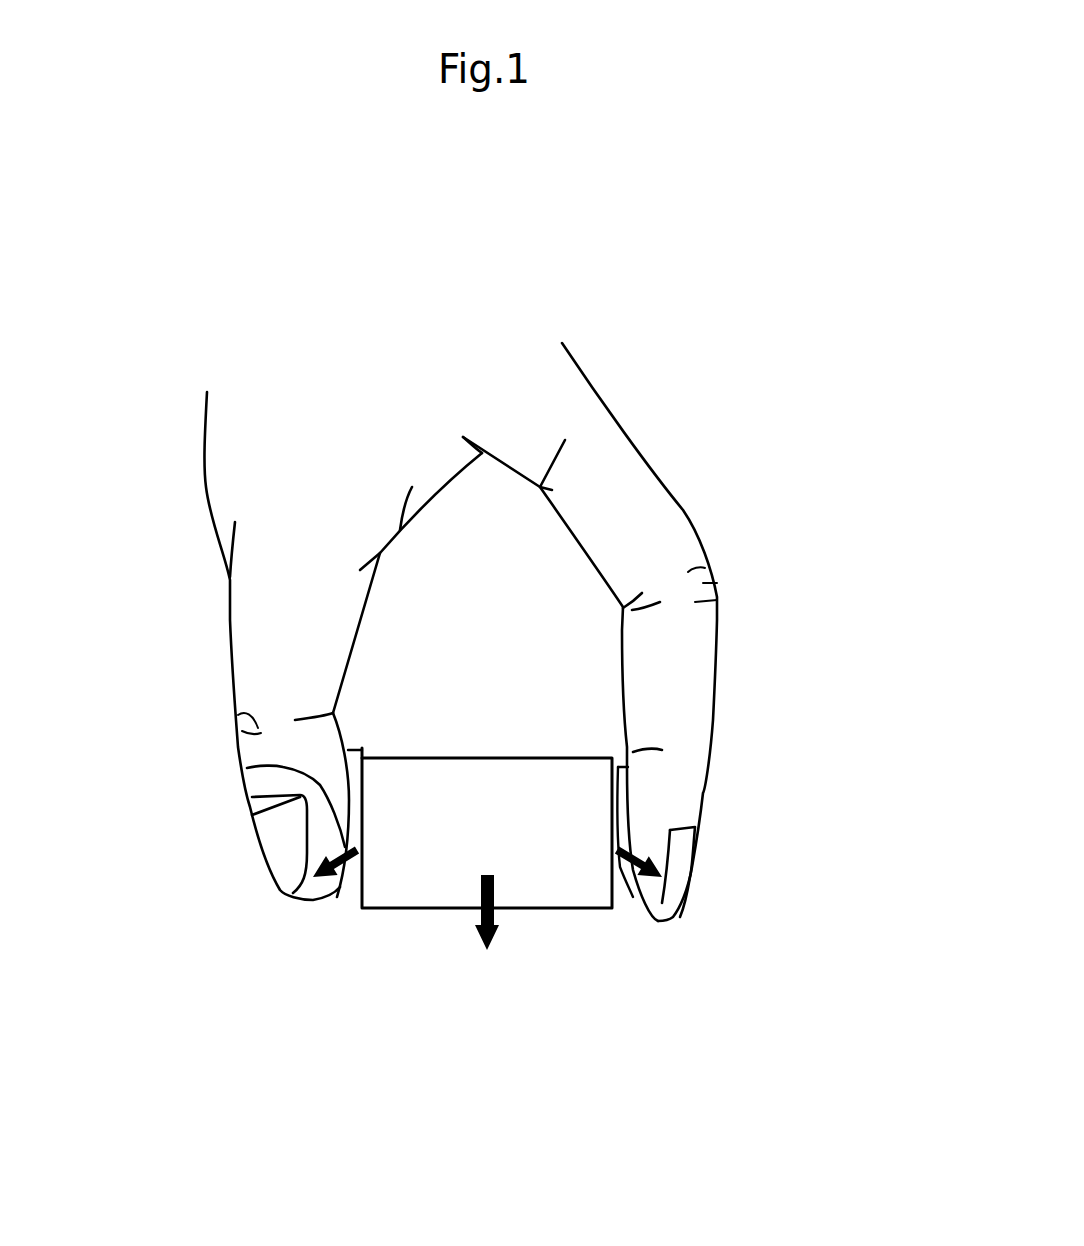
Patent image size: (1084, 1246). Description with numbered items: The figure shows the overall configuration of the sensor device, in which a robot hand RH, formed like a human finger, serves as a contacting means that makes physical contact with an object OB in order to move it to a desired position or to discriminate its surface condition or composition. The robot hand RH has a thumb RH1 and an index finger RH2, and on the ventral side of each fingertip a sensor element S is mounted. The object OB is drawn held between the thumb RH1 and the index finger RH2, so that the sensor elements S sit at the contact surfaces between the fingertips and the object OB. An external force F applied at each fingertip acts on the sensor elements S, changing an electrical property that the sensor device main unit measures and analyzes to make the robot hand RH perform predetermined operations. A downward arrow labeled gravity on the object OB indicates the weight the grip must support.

The robot hand RH is at (685, 460).
The thumb RH1 is at (195, 670).
The index finger RH2 is at (745, 703).
The external force F is at (247, 768).
The sensor elements S is at (333, 910).
The object OB is at (453, 908).
The gravity force gravity is at (497, 893).